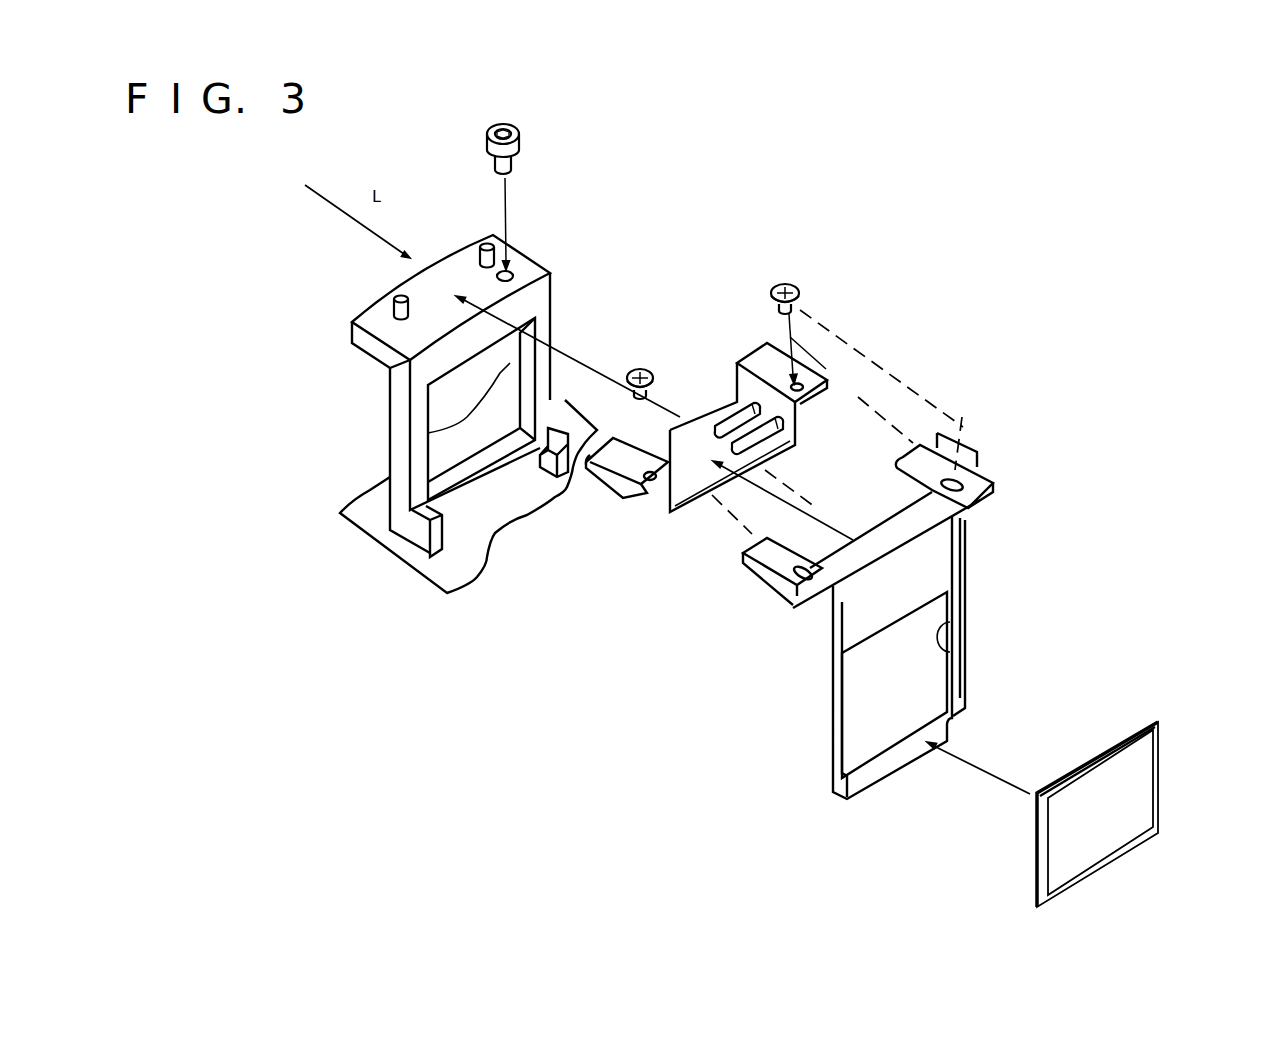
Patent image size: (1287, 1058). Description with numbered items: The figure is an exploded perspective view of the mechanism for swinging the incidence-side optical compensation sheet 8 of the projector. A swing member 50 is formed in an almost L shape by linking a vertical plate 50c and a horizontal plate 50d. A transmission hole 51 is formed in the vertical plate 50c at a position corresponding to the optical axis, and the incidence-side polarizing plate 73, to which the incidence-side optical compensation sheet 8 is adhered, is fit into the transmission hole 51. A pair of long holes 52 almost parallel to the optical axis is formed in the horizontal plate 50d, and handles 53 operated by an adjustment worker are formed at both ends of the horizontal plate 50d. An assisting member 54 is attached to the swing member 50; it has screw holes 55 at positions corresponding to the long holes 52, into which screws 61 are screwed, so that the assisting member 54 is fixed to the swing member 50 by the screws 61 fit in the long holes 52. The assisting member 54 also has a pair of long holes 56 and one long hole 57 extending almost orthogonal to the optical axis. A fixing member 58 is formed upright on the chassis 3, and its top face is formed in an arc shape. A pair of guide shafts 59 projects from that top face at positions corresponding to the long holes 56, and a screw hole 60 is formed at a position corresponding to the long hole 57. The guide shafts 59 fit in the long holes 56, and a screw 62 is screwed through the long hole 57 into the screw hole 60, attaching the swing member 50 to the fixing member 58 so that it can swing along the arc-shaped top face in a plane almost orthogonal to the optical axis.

The chassis 3 is at (363, 500).
The incidence-side optical compensation sheet 8 is at (1142, 778).
The swing member 50 is at (955, 574).
The vertical plate 50c is at (938, 550).
The horizontal plate 50d is at (867, 497).
The transmission hole 51 is at (950, 630).
The long hole 52 is at (803, 567).
The handle 53 is at (965, 433).
The assisting member 54 is at (675, 513).
The screw hole 55 is at (826, 369).
The long hole 56 is at (733, 400).
The long hole 57 is at (780, 458).
The fixing member 58 is at (545, 292).
The guide shaft 59 is at (403, 296).
The screw hole 60 is at (512, 272).
The screw 61 is at (652, 368).
The screw 62 is at (518, 143).
The incidence-side polarizing plate 73 is at (1137, 722).